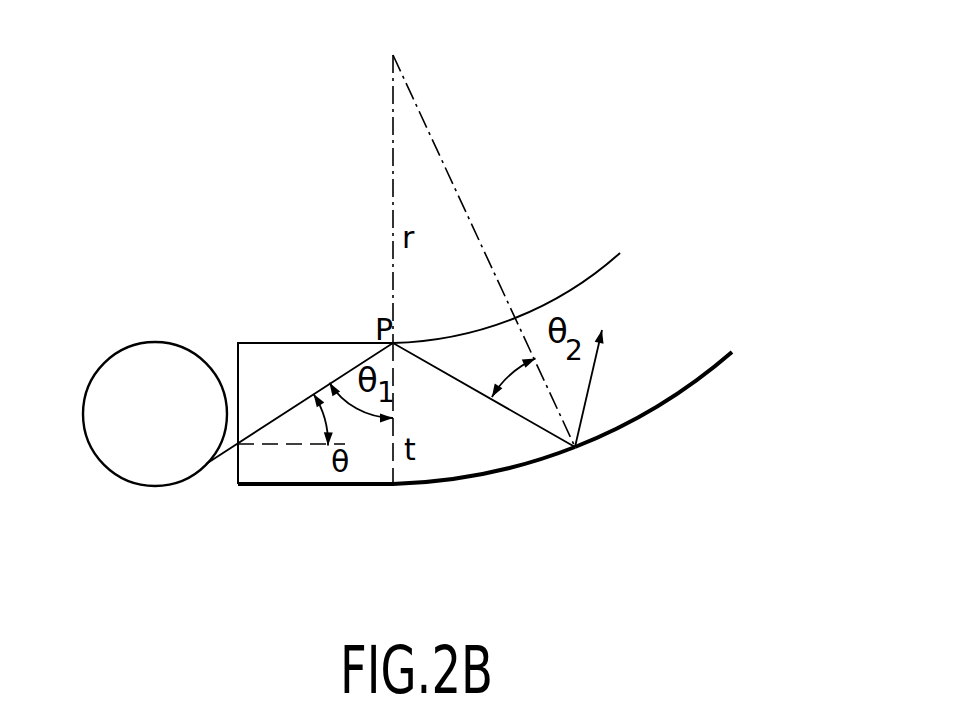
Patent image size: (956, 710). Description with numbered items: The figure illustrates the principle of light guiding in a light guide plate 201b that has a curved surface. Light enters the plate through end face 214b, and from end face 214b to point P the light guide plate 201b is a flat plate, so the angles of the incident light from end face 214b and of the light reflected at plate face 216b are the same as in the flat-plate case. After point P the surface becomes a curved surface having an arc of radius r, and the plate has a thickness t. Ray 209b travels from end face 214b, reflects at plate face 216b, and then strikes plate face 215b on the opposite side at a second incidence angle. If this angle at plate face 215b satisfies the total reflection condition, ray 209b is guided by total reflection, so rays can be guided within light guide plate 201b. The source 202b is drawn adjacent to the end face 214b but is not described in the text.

The light source (lamp) 202b is at (157, 455).
The end face 214b is at (240, 370).
The ray 209b is at (313, 392).
The plate face 216b is at (523, 317).
The light guide plate 201b is at (458, 460).
The plate face 215b is at (633, 420).